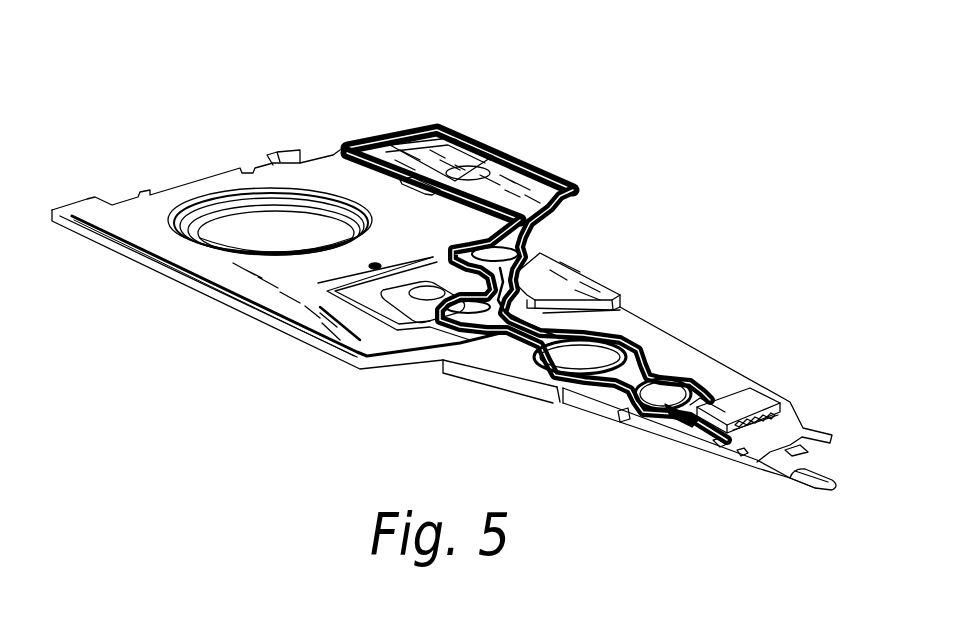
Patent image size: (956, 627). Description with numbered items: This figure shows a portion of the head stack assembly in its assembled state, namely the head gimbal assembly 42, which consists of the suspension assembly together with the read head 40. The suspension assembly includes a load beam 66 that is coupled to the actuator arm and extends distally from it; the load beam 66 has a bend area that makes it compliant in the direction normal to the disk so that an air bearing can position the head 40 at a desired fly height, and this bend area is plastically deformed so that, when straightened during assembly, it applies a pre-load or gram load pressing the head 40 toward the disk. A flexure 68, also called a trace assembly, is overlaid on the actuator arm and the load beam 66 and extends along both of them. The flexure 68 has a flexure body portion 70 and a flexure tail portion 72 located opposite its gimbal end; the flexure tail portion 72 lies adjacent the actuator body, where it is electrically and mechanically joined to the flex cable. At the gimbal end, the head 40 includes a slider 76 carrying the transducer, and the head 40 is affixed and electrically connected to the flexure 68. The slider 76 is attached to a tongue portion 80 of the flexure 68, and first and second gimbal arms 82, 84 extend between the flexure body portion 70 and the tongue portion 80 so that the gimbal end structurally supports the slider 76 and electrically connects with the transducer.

The read head 40 is at (765, 402).
The head gimbal assembly 42 is at (599, 80).
The load beam 66 is at (582, 274).
The flexure 68 is at (652, 343).
The flexure body portion 70 is at (405, 136).
The flexure tail portion 72 is at (243, 310).
The slider 76 is at (752, 399).
The tongue portion 80 is at (681, 434).
The first gimbal arm 82 is at (725, 392).
The second gimbal arm 84 is at (640, 414).